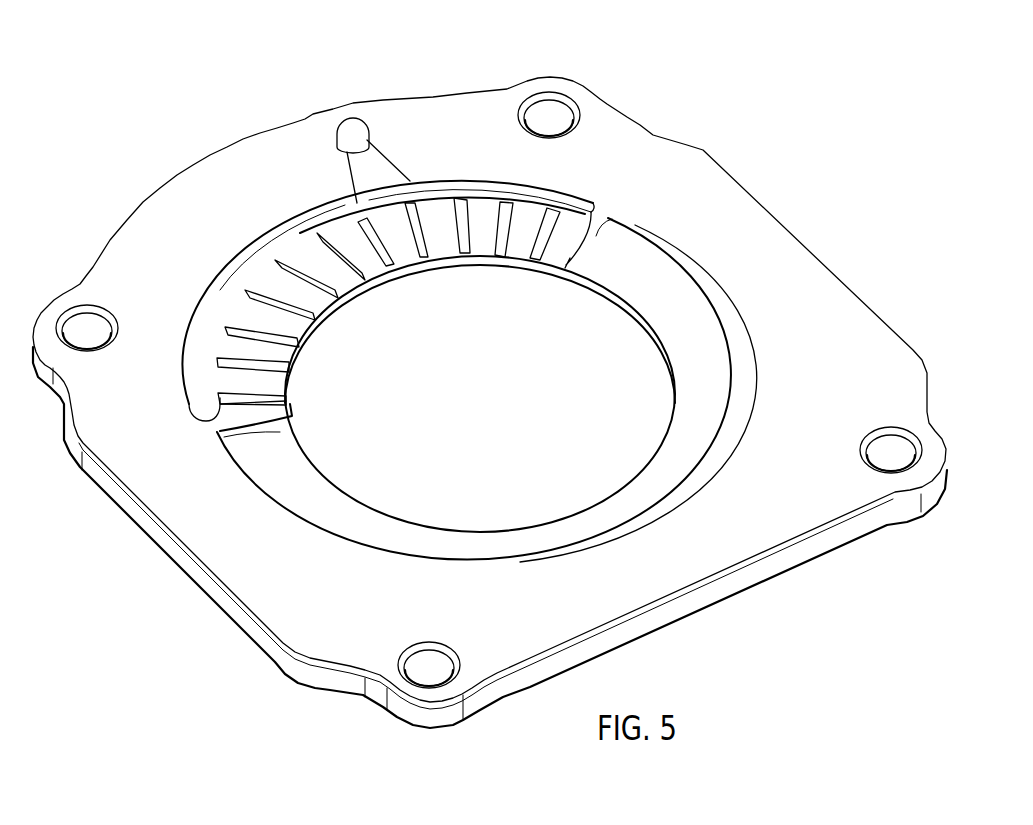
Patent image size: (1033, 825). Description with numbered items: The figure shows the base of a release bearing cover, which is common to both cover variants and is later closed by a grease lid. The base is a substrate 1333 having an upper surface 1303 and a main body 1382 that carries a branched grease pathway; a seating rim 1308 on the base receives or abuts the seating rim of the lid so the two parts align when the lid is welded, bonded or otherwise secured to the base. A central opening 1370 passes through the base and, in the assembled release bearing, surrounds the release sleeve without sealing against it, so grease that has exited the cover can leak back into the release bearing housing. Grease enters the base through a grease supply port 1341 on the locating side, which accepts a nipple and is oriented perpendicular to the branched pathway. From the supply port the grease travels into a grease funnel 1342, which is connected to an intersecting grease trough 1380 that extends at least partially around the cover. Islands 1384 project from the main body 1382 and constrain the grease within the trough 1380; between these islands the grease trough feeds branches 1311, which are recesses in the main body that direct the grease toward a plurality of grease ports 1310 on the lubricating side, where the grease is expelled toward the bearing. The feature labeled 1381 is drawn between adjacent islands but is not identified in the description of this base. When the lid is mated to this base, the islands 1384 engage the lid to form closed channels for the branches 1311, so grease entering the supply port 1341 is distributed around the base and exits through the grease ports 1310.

The upper surface 1303 is at (831, 297).
The seating rim 1308 is at (733, 317).
The grease ports 1310 is at (463, 253).
The branches 1311 is at (603, 193).
The substrate 1333 is at (803, 157).
The grease supply port 1341 is at (352, 126).
The grease funnel 1342 is at (387, 180).
The central opening 1370 is at (675, 440).
The grease trough 1380 is at (570, 200).
The channel 1381 is at (527, 220).
The main body 1382 is at (513, 257).
The islands 1384 is at (313, 257).